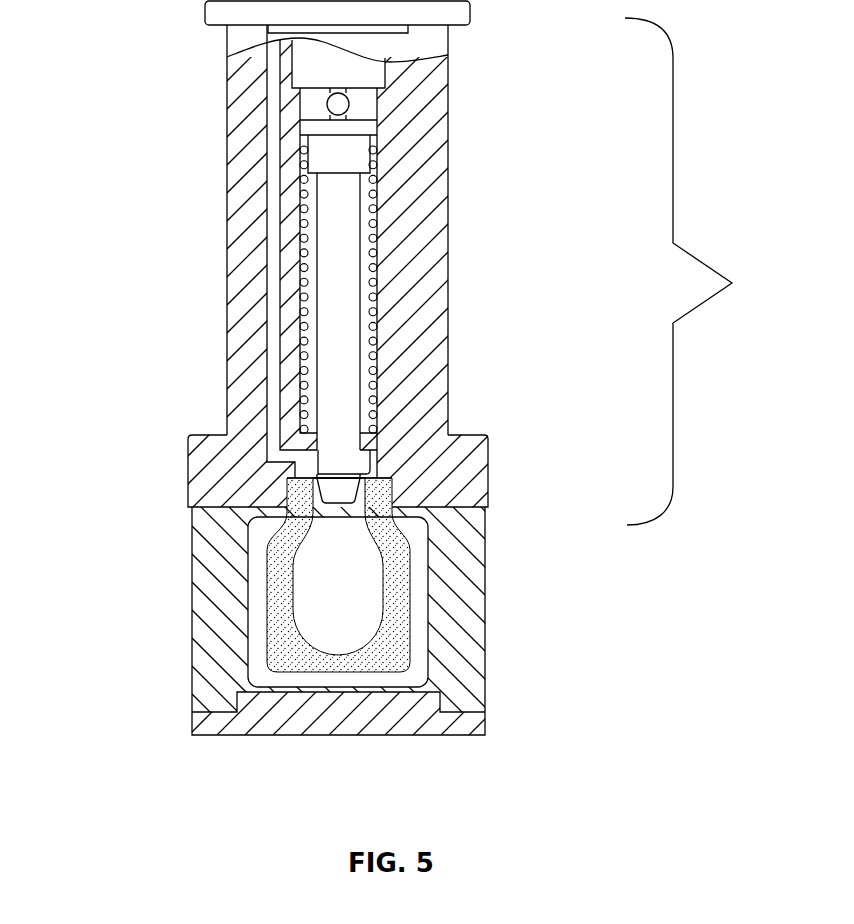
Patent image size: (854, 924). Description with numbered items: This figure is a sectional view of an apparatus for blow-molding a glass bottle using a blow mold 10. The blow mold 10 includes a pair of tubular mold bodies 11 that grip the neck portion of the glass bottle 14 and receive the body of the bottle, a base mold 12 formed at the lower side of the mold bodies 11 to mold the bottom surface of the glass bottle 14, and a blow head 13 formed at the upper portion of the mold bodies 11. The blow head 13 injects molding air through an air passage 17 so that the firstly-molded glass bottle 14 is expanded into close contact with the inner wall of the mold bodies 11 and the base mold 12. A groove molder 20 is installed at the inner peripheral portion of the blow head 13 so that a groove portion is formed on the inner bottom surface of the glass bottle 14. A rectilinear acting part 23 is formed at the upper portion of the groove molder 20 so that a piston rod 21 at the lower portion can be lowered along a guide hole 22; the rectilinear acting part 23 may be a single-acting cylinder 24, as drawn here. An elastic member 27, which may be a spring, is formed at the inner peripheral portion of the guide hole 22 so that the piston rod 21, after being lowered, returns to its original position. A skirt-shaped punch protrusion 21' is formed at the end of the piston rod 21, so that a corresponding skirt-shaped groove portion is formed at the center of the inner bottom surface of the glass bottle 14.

The blow mold 10 is at (198, 460).
The tubular mold bodies 11 is at (447, 628).
The base mold 12 is at (433, 725).
The blow head 13 is at (240, 198).
The glass bottle 14 is at (287, 572).
The air passage 17 is at (272, 288).
The groove molder 20 is at (698, 271).
The piston rod 21 is at (477, 311).
The punch protrusion 21' is at (479, 479).
The guide hole 22 is at (378, 388).
The rectilinear acting part 23 is at (365, 144).
The single-acting cylinder 24 is at (374, 108).
The elastic member 27 is at (378, 234).